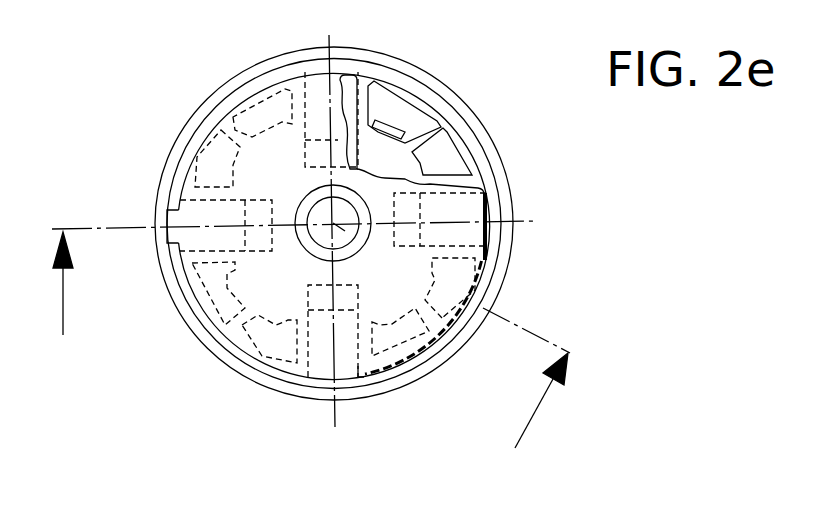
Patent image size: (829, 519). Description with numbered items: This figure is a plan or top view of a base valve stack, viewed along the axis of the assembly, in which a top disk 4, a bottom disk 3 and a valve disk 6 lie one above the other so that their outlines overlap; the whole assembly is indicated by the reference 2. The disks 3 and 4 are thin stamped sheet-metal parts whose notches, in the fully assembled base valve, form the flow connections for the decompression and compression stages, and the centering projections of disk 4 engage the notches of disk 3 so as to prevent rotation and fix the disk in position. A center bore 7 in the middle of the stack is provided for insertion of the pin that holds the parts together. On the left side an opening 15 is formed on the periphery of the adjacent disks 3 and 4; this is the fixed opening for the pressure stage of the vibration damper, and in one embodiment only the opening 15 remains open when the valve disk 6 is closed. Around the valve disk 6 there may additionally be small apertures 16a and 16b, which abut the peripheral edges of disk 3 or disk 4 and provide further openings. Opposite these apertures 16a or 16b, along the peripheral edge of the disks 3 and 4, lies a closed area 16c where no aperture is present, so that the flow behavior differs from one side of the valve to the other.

The rotor 2 is at (172, 96).
The bottom disk 3 is at (176, 299).
The top disk 4 is at (210, 327).
The valve disk 6 is at (334, 283).
The center bore 7 is at (318, 237).
The opening 15 is at (175, 225).
The aperture 16a is at (488, 212).
The aperture 16b is at (349, 373).
The closed area 16c is at (342, 76).